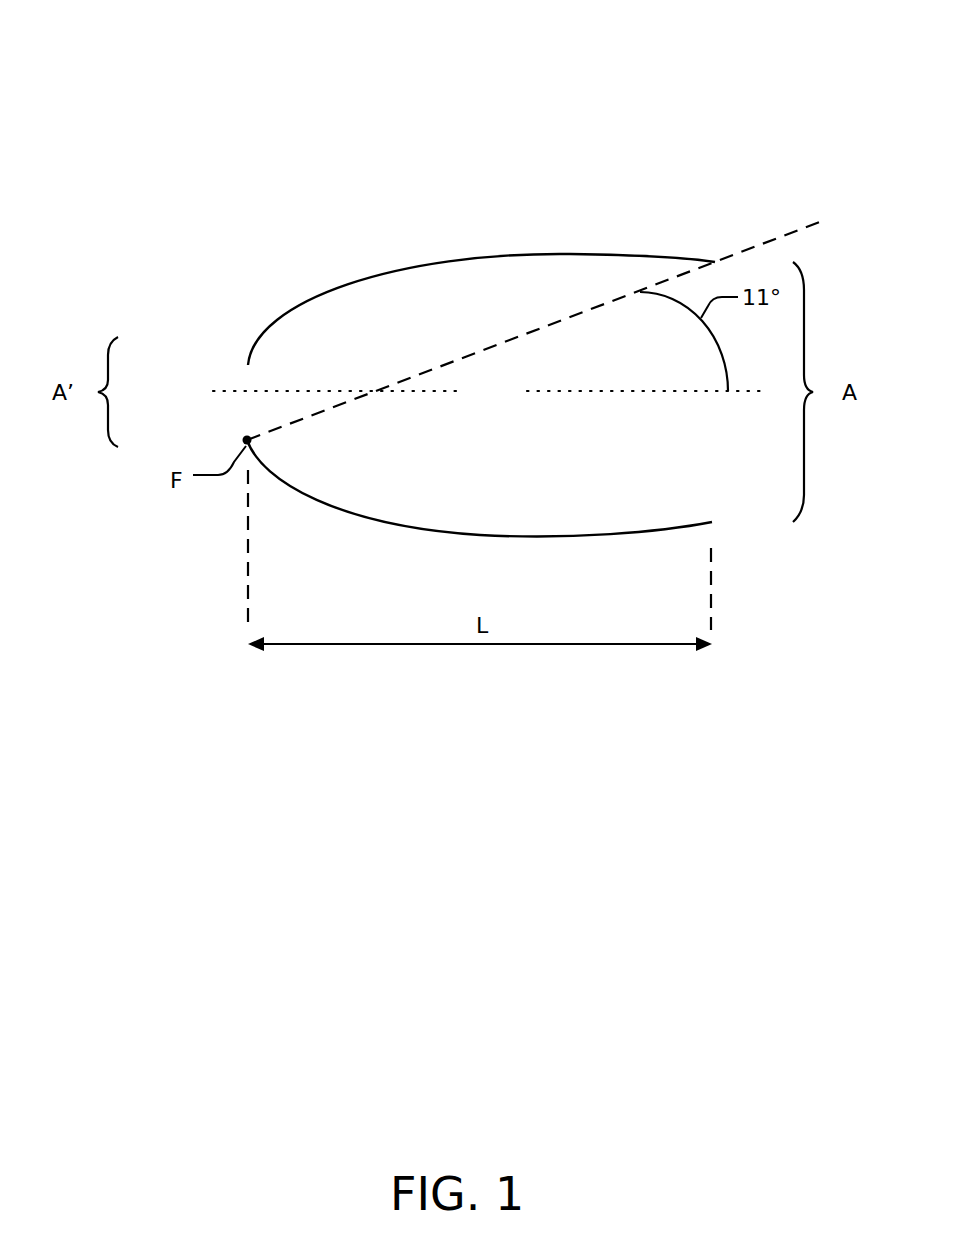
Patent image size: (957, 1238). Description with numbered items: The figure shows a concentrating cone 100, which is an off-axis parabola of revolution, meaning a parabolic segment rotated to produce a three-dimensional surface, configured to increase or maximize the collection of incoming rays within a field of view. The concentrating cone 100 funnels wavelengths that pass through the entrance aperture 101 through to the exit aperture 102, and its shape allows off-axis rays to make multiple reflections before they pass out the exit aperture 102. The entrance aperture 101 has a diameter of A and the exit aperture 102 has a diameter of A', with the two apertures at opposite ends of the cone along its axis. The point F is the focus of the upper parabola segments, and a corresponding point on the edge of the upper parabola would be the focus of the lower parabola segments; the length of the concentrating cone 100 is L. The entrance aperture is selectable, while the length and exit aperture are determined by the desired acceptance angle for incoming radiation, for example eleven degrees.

The concentrating cone 100 is at (544, 84).
The entrance aperture 101 is at (748, 508).
The exit aperture 102 is at (230, 345).